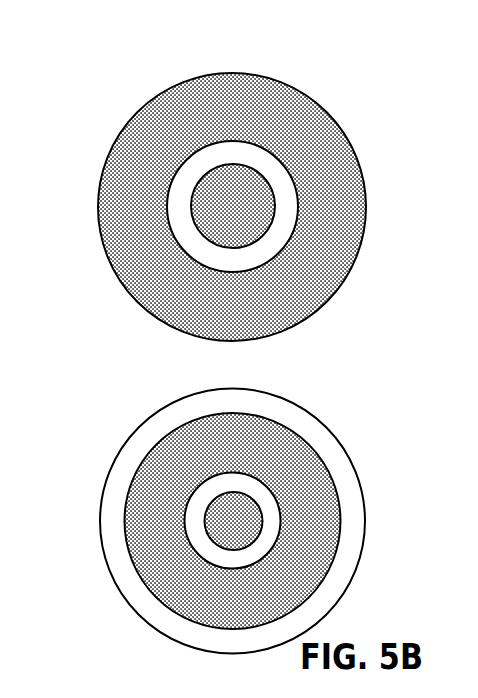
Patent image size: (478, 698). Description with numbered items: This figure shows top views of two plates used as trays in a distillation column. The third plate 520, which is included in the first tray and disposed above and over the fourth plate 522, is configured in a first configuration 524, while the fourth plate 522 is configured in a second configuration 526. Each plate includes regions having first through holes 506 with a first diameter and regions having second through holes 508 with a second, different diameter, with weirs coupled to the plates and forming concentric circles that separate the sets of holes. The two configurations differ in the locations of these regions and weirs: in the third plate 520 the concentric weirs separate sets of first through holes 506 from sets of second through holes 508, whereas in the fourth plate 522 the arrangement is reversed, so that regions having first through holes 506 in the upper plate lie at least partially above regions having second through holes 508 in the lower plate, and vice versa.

The first through holes 506 is at (137, 142).
The second through holes 508 is at (278, 185).
The third plate 520 is at (94, 49).
The fourth plate 522 is at (95, 401).
The first configuration 524 is at (218, 175).
The second configuration 526 is at (219, 496).